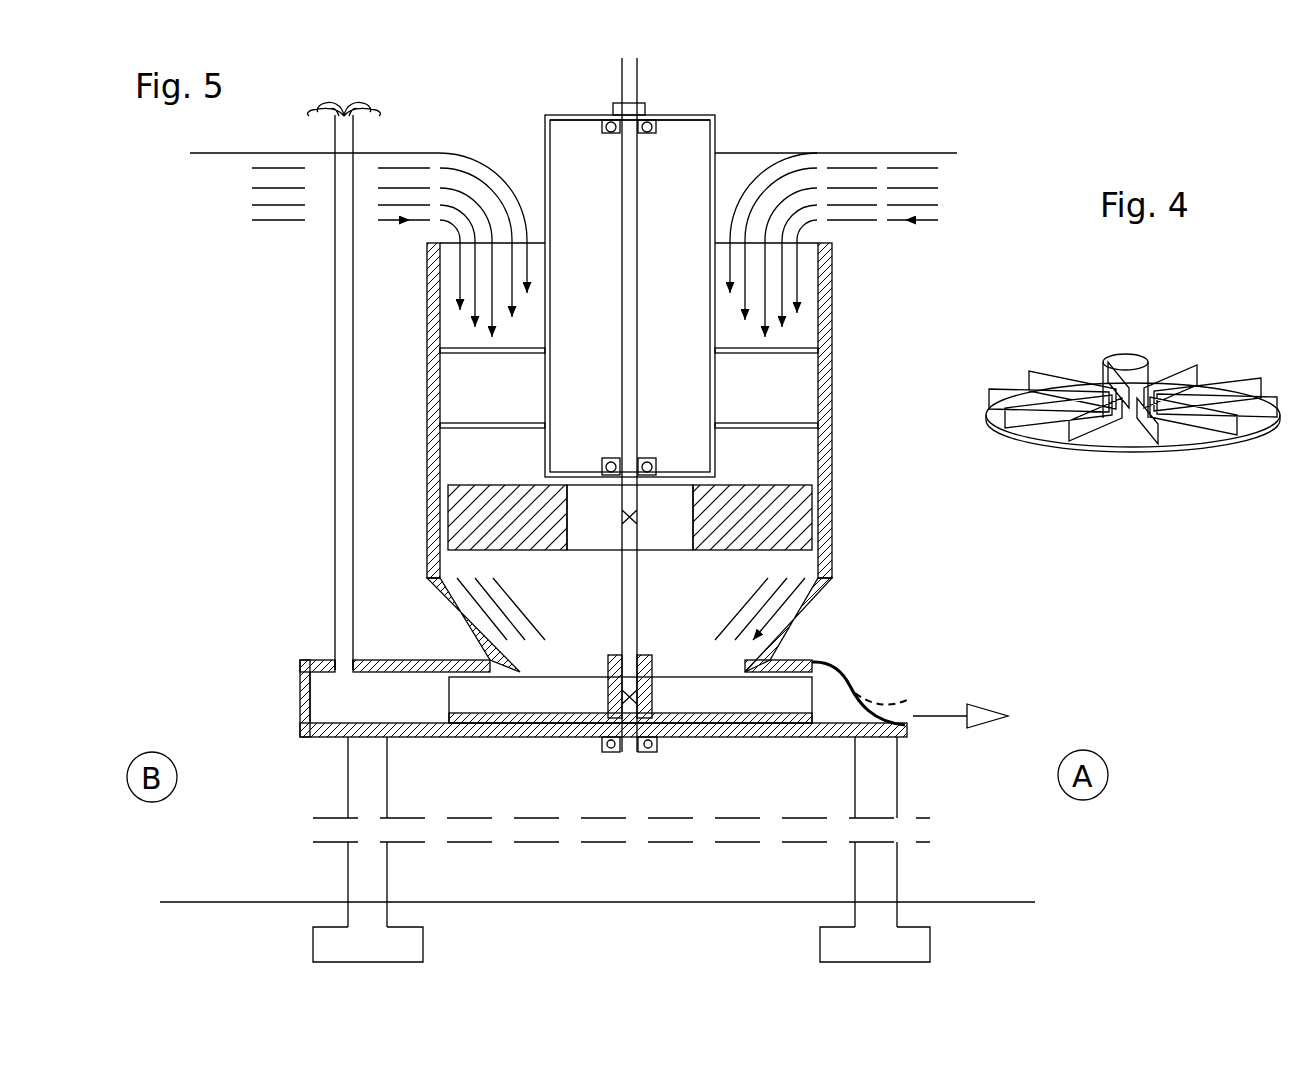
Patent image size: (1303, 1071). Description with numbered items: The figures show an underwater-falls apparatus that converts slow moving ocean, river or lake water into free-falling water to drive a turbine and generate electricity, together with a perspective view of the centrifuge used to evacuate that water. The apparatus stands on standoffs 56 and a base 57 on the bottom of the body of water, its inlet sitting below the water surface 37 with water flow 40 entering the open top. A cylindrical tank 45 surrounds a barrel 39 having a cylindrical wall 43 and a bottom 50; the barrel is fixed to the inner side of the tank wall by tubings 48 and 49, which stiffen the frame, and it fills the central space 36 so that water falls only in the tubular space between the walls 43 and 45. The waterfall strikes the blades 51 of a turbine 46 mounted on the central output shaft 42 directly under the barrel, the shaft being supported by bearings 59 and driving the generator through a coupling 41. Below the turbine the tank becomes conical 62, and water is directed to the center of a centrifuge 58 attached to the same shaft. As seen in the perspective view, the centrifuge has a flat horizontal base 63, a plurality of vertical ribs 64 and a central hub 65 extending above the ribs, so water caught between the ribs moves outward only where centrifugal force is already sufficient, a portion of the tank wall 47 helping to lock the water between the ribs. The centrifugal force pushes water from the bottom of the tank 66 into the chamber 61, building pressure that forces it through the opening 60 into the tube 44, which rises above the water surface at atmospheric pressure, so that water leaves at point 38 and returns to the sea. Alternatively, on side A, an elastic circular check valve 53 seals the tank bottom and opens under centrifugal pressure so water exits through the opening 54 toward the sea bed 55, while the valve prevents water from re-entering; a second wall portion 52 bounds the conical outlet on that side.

In FIG. 5, the space 36 is at (545, 150).
In FIG. 5, the water surface 37 is at (888, 152).
In FIG. 5, the point 38 is at (358, 112).
In FIG. 5, the barrel 39 is at (580, 114).
In FIG. 5, the water flow 40 is at (505, 185).
In FIG. 5, the coupling 41 is at (648, 104).
In FIG. 5, the central output shaft 42 is at (672, 133).
In FIG. 5, the cylindrical wall 43 is at (716, 130).
In FIG. 5, the tube 44 is at (335, 330).
In FIG. 5, the cylindrical tank 45 is at (427, 322).
In FIG. 5, the turbine 46 is at (467, 484).
In FIG. 5, the wall 47 is at (475, 660).
In FIG. 5, the tubing 48 is at (832, 376).
In FIG. 5, the tubing 49 is at (818, 432).
In FIG. 5, the bottom 50 is at (700, 468).
In FIG. 5, the blades 51 is at (788, 530).
In FIG. 5, the funnel wall 52 is at (813, 590).
In FIG. 5, the elastic circular check valve 53 is at (866, 697).
In FIG. 5, the opening 54 is at (992, 710).
In FIG. 5, the sea bed 55 is at (972, 901).
In FIG. 5, the standoffs 56 is at (348, 874).
In FIG. 5, the base 57 is at (313, 942).
In FIG. 5, the centrifuge 58 is at (447, 702).
In FIG. 5, the bearings 59 is at (613, 753).
In FIG. 5, the opening 60 is at (345, 675).
In FIG. 5, the chamber 61 is at (327, 708).
In FIG. 5, the conical portion 62 is at (445, 608).
In FIG. 4, the flat horizontal base 63 is at (1077, 457).
In FIG. 4, the vertical ribs 64 is at (1247, 388).
In FIG. 4, the central hub 65 is at (1106, 354).
In FIG. 5, the bottom of tank 66 is at (753, 738).